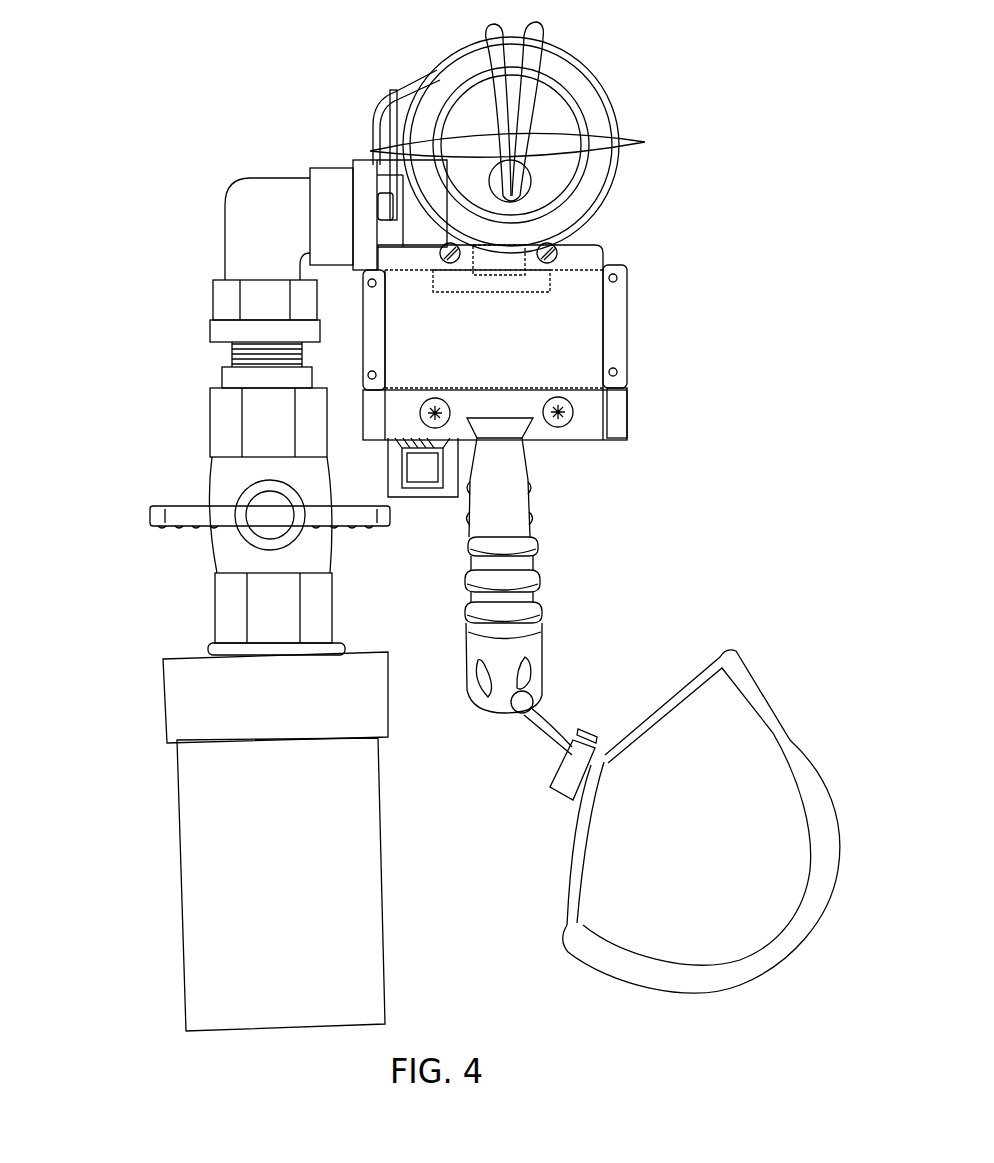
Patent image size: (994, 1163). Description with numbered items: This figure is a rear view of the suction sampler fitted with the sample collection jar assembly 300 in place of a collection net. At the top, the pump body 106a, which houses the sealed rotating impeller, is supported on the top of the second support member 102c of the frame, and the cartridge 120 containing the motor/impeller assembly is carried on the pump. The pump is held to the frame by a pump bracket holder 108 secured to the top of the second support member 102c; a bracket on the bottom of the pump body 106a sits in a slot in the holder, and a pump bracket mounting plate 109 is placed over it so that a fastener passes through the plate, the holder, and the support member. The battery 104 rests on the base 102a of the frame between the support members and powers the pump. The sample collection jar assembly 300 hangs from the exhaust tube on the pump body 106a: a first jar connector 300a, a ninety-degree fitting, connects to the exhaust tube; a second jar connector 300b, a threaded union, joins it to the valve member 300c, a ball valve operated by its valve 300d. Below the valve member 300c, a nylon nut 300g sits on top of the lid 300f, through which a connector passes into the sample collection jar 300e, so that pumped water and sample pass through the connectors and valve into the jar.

The cartridge 120 is at (563, 73).
The pump body 106a is at (610, 118).
The second support member 102c is at (593, 251).
The battery 104 is at (615, 331).
The base 102a is at (617, 415).
The pump bracket holder 108 is at (458, 285).
The pump bracket mounting plate 109 is at (513, 265).
The sample collection jar assembly 300 is at (90, 155).
The first jar connector 300a is at (250, 196).
The second jar connector 300b is at (233, 377).
The valve member 300c is at (237, 515).
The valve 300d is at (270, 509).
The sample collection jar 300e is at (197, 812).
The lid 300f is at (178, 727).
The nylon nut 300g is at (207, 652).